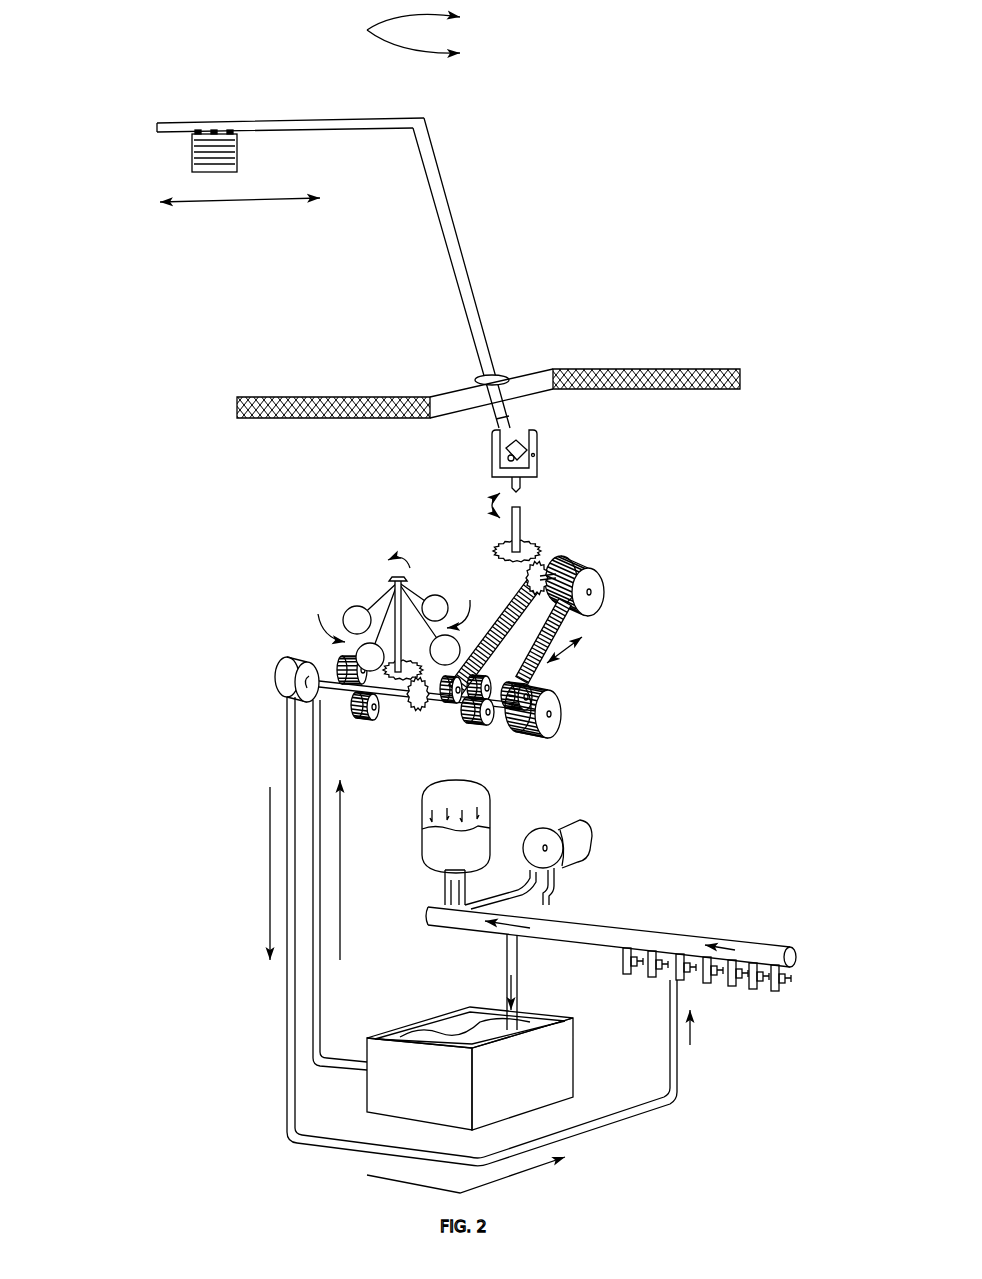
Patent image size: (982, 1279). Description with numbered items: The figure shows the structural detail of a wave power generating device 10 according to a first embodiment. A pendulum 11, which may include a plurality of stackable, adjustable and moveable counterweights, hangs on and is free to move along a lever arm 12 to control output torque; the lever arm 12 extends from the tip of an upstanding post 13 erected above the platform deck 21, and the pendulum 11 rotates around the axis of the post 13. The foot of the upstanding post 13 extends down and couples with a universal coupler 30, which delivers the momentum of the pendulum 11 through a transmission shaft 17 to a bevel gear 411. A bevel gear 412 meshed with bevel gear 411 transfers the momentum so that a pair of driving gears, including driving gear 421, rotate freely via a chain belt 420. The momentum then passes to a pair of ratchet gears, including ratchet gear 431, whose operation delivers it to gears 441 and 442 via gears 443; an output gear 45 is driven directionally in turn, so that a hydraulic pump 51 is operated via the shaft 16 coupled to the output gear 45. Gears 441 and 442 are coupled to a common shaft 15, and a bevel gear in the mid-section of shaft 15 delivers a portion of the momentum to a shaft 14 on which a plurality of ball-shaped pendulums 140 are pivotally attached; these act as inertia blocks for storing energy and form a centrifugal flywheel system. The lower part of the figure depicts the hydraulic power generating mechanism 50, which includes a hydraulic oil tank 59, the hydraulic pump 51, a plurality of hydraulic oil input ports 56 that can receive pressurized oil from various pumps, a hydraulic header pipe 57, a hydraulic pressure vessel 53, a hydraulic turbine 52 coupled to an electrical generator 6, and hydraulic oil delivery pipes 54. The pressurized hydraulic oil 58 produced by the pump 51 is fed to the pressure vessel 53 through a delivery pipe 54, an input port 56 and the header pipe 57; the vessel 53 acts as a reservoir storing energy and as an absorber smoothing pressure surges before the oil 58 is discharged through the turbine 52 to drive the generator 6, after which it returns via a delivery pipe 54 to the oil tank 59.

The wave power generating device 10 is at (583, 215).
The pendulum 11 is at (188, 155).
The lever arm 12 is at (287, 118).
The upstanding post 13 is at (443, 253).
The platform deck 21 is at (657, 365).
The universal coupler 30 is at (553, 455).
The transmission shaft 17 is at (525, 528).
The bevel gear 411 is at (497, 550).
The bevel gear 412 is at (548, 562).
The chain belt 420 is at (505, 608).
The driving gear 421 is at (595, 585).
The shaft 14 is at (353, 618).
The ball-shaped pendulums 140 is at (400, 618).
The gear 442 is at (340, 660).
The hydraulic pump 51 is at (285, 678).
The shaft 16 is at (347, 700).
The output gear 45 is at (365, 725).
The common shaft 15 is at (428, 705).
The gear 441 is at (490, 728).
The gears 443 is at (522, 683).
The ratchet gear 431 is at (553, 718).
The hydraulic pressure vessel 53 is at (497, 812).
The electrical generator 6 is at (597, 832).
The hydraulic turbine 52 is at (567, 848).
The hydraulic header pipe 57 is at (722, 930).
The hydraulic oil input ports 56 is at (685, 985).
The hydraulic oil delivery pipes 54 is at (445, 878).
The pressurized hydraulic oil 58 is at (432, 1030).
The hydraulic oil tank 59 is at (519, 1072).
The hydraulic power generating mechanism 50 is at (712, 1100).